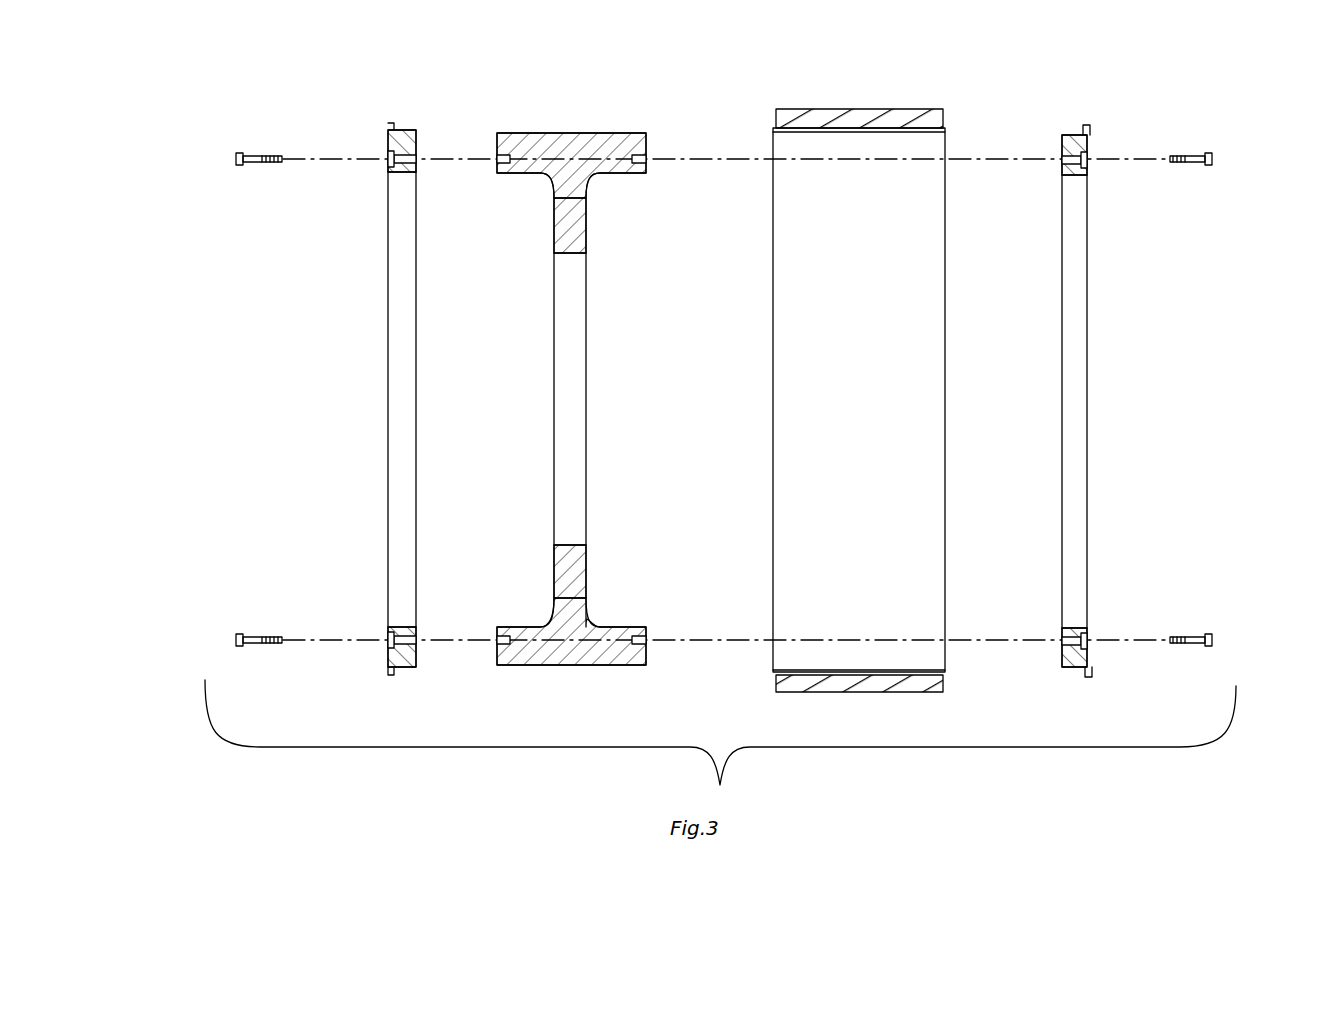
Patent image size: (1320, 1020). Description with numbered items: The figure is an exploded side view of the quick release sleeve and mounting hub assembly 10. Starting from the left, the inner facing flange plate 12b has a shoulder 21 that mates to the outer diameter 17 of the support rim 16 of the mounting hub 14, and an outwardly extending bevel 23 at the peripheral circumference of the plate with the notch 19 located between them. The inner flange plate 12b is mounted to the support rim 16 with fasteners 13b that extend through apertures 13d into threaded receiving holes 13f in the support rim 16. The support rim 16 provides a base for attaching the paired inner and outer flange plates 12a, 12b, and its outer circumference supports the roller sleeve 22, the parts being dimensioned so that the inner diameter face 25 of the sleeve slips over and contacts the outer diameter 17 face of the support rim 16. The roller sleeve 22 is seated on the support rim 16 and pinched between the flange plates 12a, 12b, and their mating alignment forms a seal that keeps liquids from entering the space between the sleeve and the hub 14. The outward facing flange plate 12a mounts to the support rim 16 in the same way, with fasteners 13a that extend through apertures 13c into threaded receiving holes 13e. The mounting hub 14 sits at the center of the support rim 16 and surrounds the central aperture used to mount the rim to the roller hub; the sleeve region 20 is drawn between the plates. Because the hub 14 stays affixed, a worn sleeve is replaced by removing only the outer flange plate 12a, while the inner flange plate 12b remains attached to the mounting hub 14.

The quick release sleeve and mounting hub assembly 10 is at (193, 100).
The outer flange plate 12a is at (1090, 336).
The inner flange plate 12b is at (400, 340).
The fasteners 13a is at (1200, 158).
The fasteners 13b is at (252, 165).
The apertures 13c is at (1090, 162).
The apertures 13d is at (416, 158).
The threaded receiving holes 13e is at (640, 165).
The threaded receiving holes 13f is at (497, 160).
The mounting hub 14 is at (595, 240).
The support rim 16 is at (545, 150).
The outer diameter 17 is at (620, 140).
The notch 19 is at (390, 128).
The housing 20 is at (778, 125).
The shoulder 21 is at (408, 138).
The roller sleeve 22 is at (865, 120).
The bevel 23 is at (394, 126).
The inner diameter face 25 is at (940, 133).